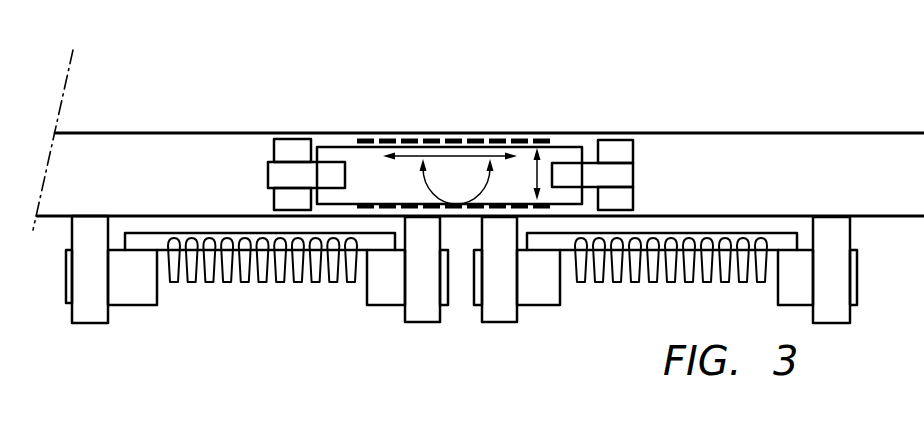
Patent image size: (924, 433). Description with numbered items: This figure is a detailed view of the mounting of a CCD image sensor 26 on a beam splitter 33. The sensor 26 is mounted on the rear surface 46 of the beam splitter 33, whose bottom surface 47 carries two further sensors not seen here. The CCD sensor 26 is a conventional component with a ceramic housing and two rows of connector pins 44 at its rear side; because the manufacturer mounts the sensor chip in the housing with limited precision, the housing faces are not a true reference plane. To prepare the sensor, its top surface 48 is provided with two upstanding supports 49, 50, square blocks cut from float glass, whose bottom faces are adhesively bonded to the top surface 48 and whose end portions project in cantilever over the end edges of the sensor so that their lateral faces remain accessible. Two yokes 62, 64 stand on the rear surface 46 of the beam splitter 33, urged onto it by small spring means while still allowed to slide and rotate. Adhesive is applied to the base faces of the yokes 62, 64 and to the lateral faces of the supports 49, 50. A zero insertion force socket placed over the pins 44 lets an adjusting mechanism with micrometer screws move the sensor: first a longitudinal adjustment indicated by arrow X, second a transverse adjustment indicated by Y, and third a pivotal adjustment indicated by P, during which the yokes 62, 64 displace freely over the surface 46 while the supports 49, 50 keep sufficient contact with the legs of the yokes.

The beam splitter 33 is at (242, 125).
The rear surface 46 is at (782, 155).
The bottom surface 47 is at (918, 220).
The yoke 62 is at (292, 147).
The upstanding support 49 is at (328, 173).
The yoke 64 is at (618, 150).
The upstanding support 50 is at (590, 175).
The top surface 48 is at (367, 172).
The CCD sensor 26 is at (444, 130).
The connector pins 44 is at (487, 142).
The longitudinal adjustment arrow X is at (390, 153).
The pivotal adjustment arrow P is at (462, 206).
The transverse adjustment arrow Y is at (528, 165).